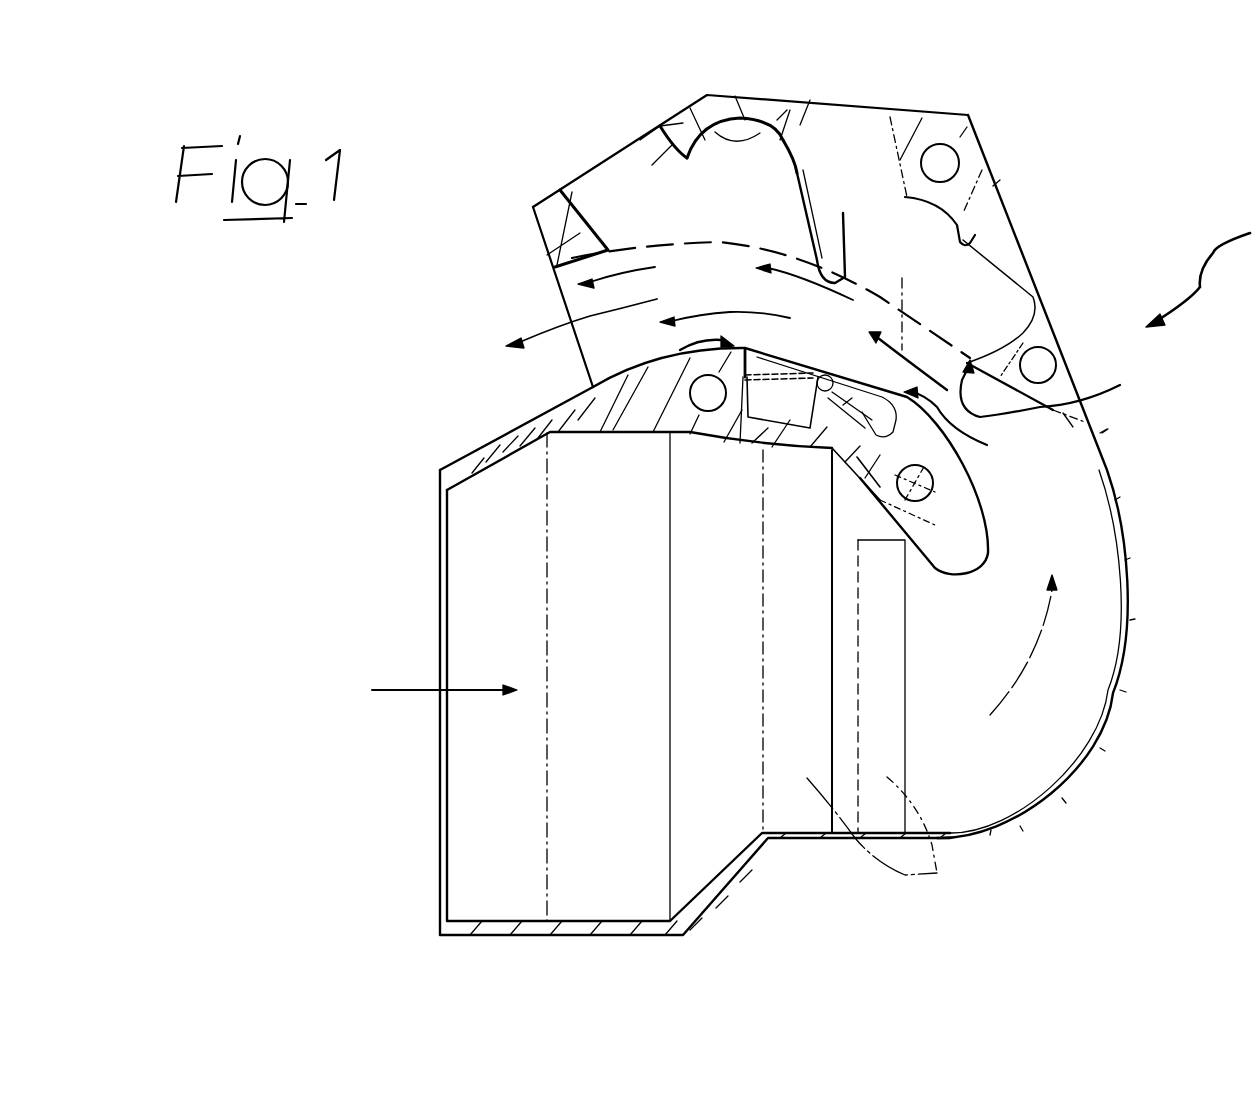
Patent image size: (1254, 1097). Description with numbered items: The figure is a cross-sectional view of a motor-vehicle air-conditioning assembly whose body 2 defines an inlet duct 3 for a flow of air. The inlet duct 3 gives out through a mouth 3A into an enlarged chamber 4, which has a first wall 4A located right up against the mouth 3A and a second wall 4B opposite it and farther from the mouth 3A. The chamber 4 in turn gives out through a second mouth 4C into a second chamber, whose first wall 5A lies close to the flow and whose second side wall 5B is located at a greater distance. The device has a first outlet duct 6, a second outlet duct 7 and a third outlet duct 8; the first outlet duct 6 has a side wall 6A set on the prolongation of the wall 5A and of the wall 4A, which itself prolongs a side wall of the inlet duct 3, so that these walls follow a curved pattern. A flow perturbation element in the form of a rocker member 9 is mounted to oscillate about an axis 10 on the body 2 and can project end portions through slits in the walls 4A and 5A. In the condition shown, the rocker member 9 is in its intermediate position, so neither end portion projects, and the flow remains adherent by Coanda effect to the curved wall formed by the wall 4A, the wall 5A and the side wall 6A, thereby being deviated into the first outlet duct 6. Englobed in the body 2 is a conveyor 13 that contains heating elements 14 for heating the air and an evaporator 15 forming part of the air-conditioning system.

The body 2 is at (970, 160).
The inlet duct 3 is at (1013, 472).
The mouth 3A is at (1071, 537).
The enlarged chamber 4 is at (955, 288).
The first wall 4A is at (965, 427).
The second wall 4B is at (970, 237).
The second mouth 4C is at (835, 283).
The first wall 5A is at (663, 433).
The second side wall 5B is at (750, 140).
The first outlet duct 6 is at (577, 292).
The side wall 6A is at (604, 370).
The second outlet duct 7 is at (840, 123).
The third outlet duct 8 is at (620, 178).
The rocker member 9 is at (770, 400).
The axis 10 is at (771, 300).
The conveyor 13 is at (710, 825).
The heating elements 14 is at (871, 679).
The evaporator 15 is at (567, 755).